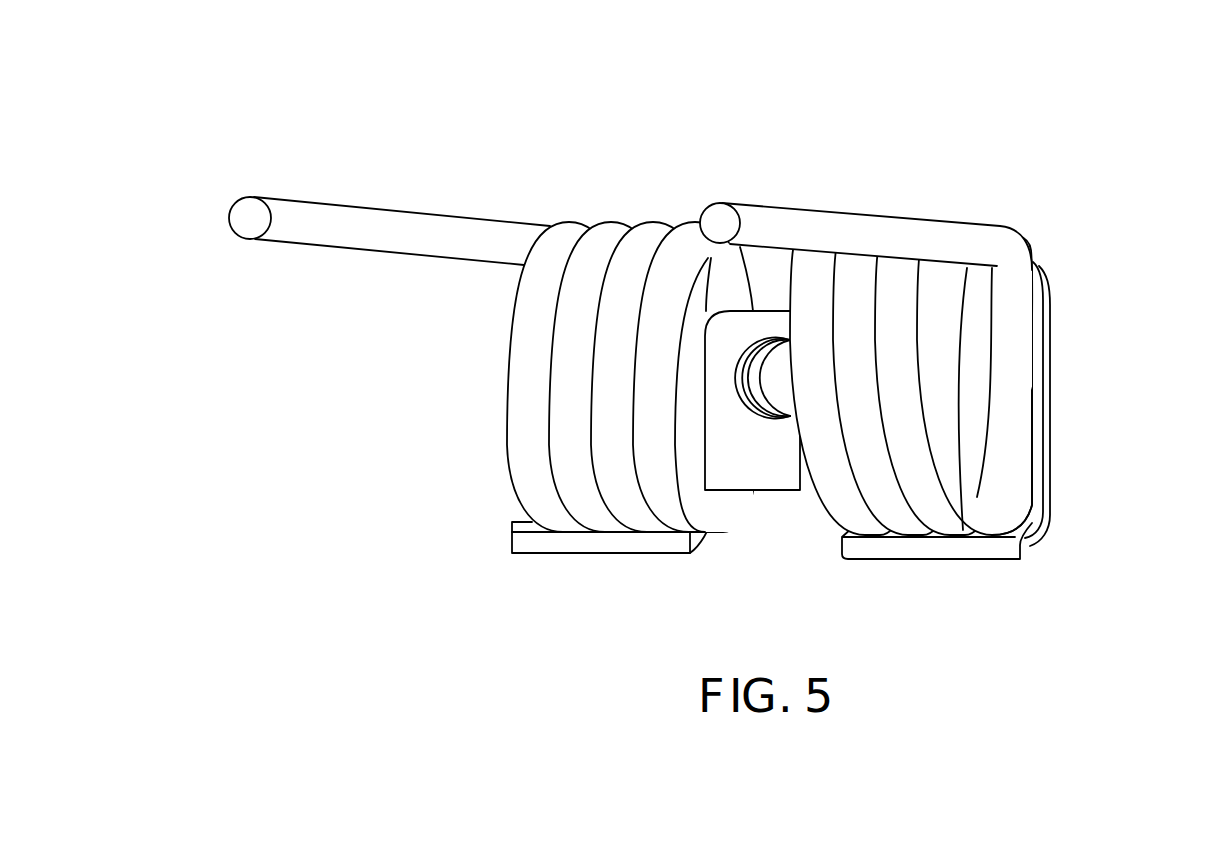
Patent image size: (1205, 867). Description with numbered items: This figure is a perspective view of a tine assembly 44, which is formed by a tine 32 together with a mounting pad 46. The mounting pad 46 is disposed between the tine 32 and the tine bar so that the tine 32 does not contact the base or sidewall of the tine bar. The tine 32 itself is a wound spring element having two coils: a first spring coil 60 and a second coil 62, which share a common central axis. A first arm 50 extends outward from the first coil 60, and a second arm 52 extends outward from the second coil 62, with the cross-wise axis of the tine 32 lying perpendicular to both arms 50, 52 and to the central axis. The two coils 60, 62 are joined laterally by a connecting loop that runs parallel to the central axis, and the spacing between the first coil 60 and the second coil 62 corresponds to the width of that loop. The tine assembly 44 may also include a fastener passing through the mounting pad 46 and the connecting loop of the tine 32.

The tine assembly 44 is at (676, 312).
The mounting pad 46 is at (790, 490).
The tine 32 is at (1010, 367).
The first arm 50 is at (321, 215).
The second arm 52 is at (871, 233).
The first spring coil 60 is at (522, 402).
The second coil 62 is at (1000, 480).